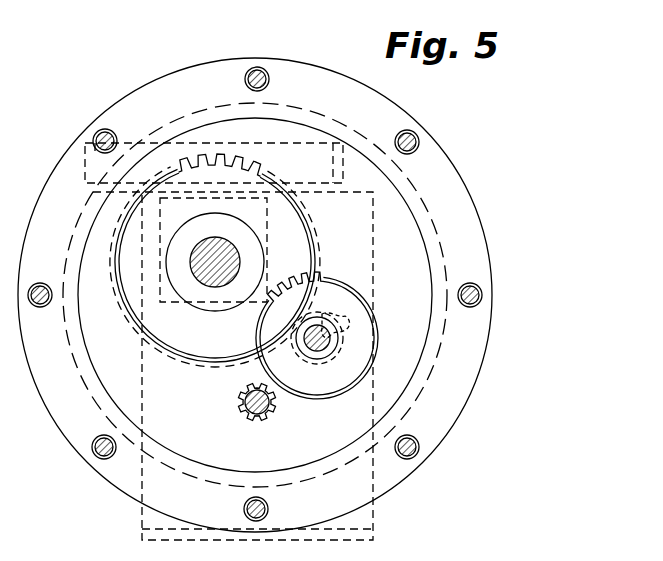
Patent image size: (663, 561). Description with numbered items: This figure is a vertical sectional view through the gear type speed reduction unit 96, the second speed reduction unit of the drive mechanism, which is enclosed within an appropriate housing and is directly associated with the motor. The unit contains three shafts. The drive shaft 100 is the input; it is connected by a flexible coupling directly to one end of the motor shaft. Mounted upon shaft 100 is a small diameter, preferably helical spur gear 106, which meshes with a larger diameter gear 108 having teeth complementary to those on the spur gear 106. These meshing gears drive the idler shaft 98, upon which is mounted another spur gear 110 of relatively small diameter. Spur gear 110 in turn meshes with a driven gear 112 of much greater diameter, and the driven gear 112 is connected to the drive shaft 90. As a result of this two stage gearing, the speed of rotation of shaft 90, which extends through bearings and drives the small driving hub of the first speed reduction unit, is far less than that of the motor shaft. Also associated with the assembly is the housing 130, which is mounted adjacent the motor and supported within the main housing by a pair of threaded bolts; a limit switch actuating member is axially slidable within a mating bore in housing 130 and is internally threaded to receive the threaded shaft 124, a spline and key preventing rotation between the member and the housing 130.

The gear type speed reduction unit 96 is at (280, 116).
The housing 130 is at (180, 163).
The threaded shaft 124 is at (225, 237).
The driven gear 112 is at (314, 223).
The drive shaft 90 is at (217, 286).
The gear 108 is at (344, 283).
The spur gear 110 is at (370, 331).
The idler shaft 98 is at (318, 354).
The helical spur gear 106 is at (238, 398).
The drive shaft 100 is at (252, 418).